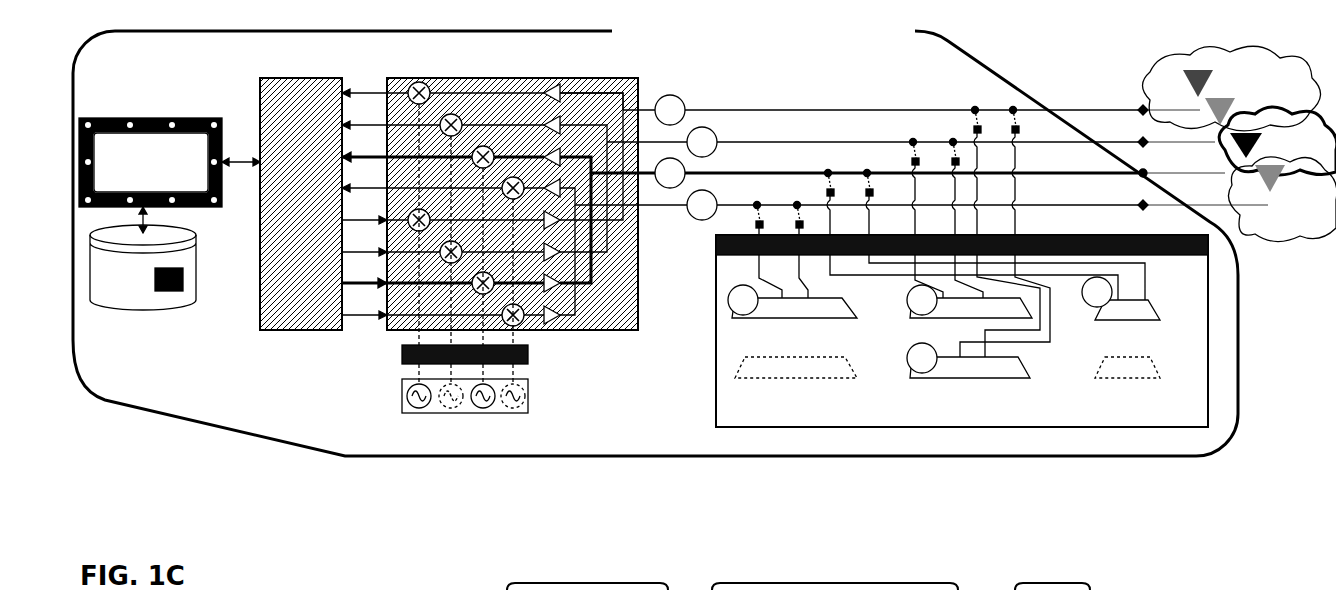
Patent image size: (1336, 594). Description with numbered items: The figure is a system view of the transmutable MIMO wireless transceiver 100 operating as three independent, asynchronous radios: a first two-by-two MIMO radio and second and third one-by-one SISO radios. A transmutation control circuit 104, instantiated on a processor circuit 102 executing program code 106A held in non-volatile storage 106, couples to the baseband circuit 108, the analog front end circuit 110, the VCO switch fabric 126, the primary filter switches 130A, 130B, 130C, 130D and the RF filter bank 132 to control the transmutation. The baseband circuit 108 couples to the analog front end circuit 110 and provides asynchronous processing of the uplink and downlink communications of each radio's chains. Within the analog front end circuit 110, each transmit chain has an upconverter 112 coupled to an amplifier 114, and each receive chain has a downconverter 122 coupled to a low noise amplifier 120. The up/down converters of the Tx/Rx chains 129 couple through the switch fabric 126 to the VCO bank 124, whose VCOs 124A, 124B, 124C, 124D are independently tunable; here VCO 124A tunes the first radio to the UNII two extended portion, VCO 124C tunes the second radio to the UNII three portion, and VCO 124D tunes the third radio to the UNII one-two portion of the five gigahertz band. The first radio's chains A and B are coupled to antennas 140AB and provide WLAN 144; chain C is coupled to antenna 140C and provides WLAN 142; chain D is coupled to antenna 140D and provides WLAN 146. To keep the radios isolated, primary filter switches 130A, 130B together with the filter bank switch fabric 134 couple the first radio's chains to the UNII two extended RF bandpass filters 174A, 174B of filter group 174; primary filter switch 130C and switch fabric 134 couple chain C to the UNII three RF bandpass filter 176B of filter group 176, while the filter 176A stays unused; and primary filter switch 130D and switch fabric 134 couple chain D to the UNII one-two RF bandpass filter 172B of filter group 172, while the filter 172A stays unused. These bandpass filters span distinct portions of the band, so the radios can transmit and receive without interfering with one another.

The MIMO wireless transceiver 100 is at (1205, 458).
The processor circuit 102 is at (150, 118).
The transmutation control circuit 104 is at (193, 125).
The non-volatile storage 106 is at (188, 228).
The program code 106A is at (155, 279).
The baseband circuit 108 is at (275, 332).
The analog front end circuit 110 is at (638, 332).
The upconverters 112 is at (521, 334).
The amplifiers 114 is at (560, 332).
The low noise amplifier 120 is at (586, 70).
The downconverters 122 is at (400, 78).
The voltage-controlled oscillator bank 124 is at (402, 382).
The VCO 124A is at (408, 408).
The VCO B 124B is at (451, 396).
The VCO 124C is at (492, 408).
The VCO 124D is at (525, 404).
The switch fabric 126 is at (402, 350).
The Tx/Rx chains 129 is at (682, 101).
The primary filter switch 130A is at (975, 108).
The primary filter switch 130B is at (913, 140).
The primary filter switch 130C is at (828, 171).
The primary filter switch 130D is at (760, 203).
The RF filter bank 132 is at (716, 310).
The filter bank switch fabric 134 is at (716, 250).
The antennas 140AB is at (1231, 97).
The antenna 140C is at (1260, 160).
The antenna 140D is at (1275, 195).
The WLAN 142 is at (1222, 150).
The WLAN 144 is at (1150, 75).
The WLAN 146 is at (1305, 242).
The UNII 1-2 channel 172 is at (562, 584).
The UNII 1-2 RF bandpass filter 172A is at (798, 380).
The UNII 1-2 RF bandpass filter 172B is at (790, 320).
The UNII 2 Extended filters 174 is at (809, 577).
The UNII 2 Extended RF bandpass filter 174A is at (985, 380).
The UNII 2 Extended RF bandpass filter 174B is at (1010, 320).
The UNII 3 filters 176 is at (1032, 577).
The UNII 3 RF bandpass filter 176A is at (1135, 380).
The UNII 3 RF bandpass filter 176B is at (1135, 322).